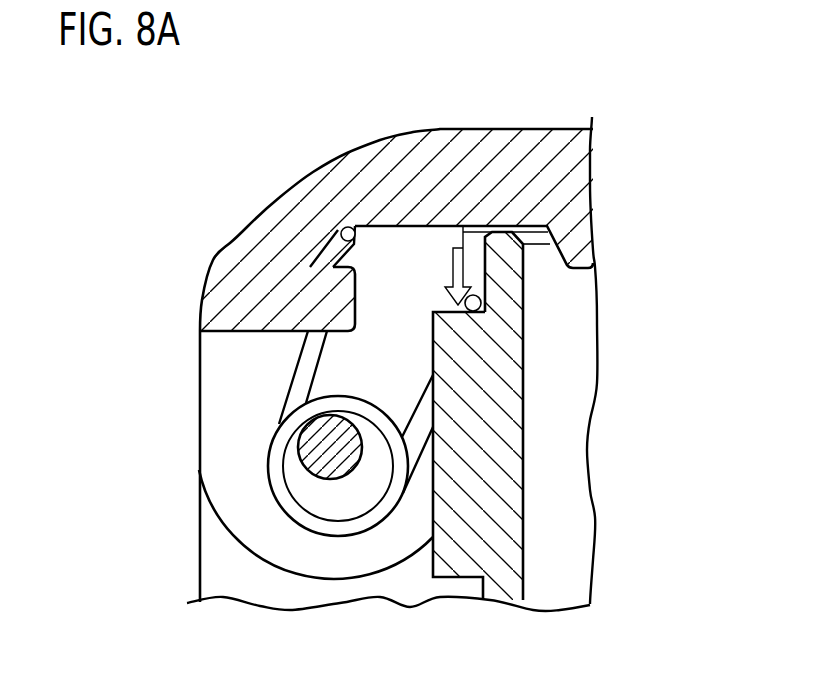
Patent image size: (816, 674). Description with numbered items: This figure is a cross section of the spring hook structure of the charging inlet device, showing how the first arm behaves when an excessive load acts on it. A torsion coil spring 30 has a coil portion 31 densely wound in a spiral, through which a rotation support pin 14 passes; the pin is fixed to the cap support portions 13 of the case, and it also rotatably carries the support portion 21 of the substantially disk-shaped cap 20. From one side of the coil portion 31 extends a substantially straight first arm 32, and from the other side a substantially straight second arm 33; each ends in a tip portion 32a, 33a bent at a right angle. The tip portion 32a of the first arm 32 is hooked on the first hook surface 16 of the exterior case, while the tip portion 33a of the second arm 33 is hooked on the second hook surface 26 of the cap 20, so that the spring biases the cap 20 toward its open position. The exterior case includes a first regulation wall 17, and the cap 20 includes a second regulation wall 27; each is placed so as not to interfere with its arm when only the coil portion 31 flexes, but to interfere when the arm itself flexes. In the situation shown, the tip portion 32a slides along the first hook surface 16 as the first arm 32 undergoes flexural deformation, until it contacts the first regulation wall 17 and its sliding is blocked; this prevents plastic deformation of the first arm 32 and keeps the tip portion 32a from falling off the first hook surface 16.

The cap support portions 13 is at (553, 416).
The rotation support pin 14 is at (332, 463).
The first hook surface 16 is at (490, 278).
The first regulation wall 17 is at (475, 390).
The cap 20 is at (543, 143).
The support portion 21 is at (218, 410).
The second hook surface 26 is at (328, 255).
The second regulation wall 27 is at (335, 293).
The torsion coil spring 30 is at (368, 493).
The coil portion 31 is at (367, 527).
The first arm 32 is at (417, 442).
The tip portion 32a is at (493, 313).
The second arm 33 is at (302, 370).
The tip portion 33a is at (348, 227).